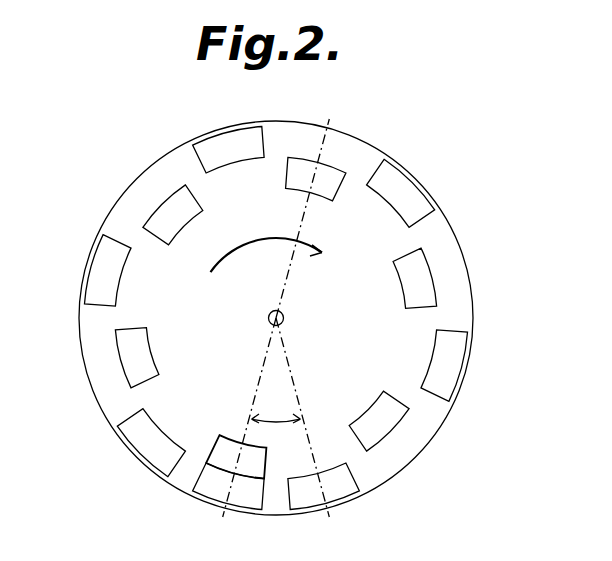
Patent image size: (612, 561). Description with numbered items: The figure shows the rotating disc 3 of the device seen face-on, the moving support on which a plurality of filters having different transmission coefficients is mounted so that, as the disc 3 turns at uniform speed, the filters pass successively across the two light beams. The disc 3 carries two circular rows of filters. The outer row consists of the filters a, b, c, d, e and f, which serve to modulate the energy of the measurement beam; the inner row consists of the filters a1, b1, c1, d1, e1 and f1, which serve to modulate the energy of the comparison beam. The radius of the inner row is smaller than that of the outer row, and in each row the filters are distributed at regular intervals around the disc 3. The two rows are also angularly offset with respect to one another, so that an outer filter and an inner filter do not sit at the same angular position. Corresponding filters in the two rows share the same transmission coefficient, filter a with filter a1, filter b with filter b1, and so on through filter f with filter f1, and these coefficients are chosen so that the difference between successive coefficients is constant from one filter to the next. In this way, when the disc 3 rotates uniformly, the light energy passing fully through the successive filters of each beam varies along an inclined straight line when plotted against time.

The rotating disc 3 is at (360, 327).
The filter a is at (302, 495).
The filter a1 is at (317, 173).
The filter b is at (450, 360).
The filter b1 is at (170, 208).
The filter c is at (395, 184).
The filter c1 is at (127, 346).
The filter d is at (223, 140).
The filter d1 is at (227, 458).
The filter e is at (102, 263).
The filter e1 is at (382, 415).
The filter f is at (148, 450).
The filter f1 is at (417, 273).